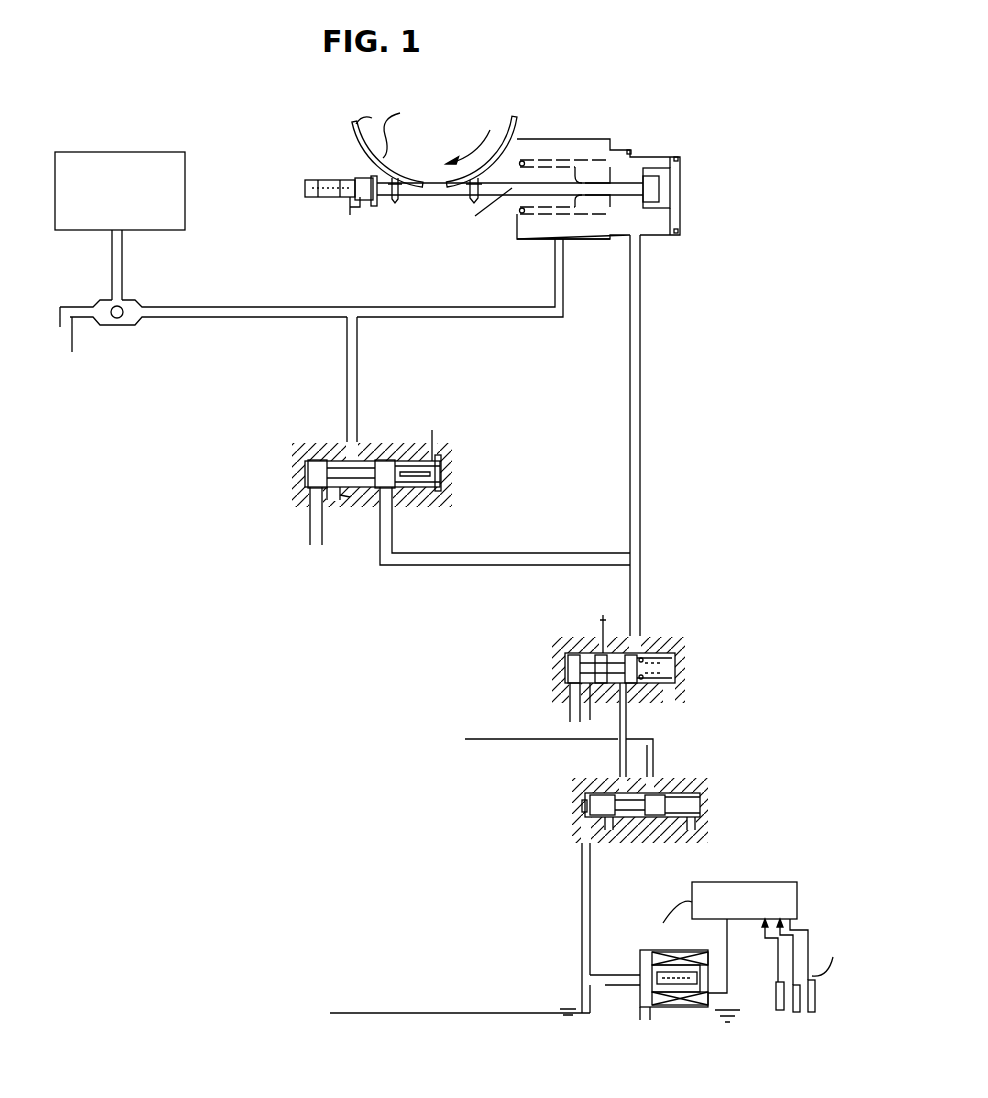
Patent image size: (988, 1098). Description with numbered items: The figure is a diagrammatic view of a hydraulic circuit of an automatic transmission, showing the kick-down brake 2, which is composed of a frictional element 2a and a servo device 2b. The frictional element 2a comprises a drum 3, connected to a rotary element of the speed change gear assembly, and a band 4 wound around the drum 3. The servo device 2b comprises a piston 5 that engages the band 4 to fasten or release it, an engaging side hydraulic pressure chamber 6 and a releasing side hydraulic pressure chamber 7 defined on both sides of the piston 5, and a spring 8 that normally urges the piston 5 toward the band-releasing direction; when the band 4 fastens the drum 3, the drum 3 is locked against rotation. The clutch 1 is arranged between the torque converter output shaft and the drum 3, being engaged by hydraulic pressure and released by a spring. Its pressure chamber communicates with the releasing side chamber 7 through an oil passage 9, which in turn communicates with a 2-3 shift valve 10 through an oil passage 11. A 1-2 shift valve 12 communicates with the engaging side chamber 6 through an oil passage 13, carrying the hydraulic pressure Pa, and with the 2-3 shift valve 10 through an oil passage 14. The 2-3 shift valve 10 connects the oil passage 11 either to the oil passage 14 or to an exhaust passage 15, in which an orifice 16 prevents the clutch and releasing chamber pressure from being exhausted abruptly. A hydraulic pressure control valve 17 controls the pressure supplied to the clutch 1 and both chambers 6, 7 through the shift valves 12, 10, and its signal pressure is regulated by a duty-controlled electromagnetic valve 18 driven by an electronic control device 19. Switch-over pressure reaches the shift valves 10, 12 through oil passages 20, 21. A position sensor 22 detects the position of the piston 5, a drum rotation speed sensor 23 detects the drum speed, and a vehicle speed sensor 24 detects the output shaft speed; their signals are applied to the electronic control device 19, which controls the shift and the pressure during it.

The clutch 1 is at (172, 152).
The K/D brake 2 is at (632, 64).
The frictional element 2a is at (568, 106).
The servo device 2b is at (642, 138).
The drum 3 is at (509, 118).
The band 4 is at (527, 126).
The piston 5 is at (524, 191).
The engaging side hydraulic pressure chamber 6 is at (634, 237).
The releasing side hydraulic pressure chamber 7 is at (536, 232).
The spring 8 is at (581, 155).
The oil passage 9 is at (272, 306).
The 2-3 shift valve 10 is at (461, 443).
The oil passage 11 is at (357, 392).
The 1-2 shift valve 12 is at (704, 640).
The oil passage 13 is at (641, 473).
The oil passage 14 is at (515, 553).
The exhaust passage 15 is at (343, 496).
The orifice 16 is at (335, 500).
The hydraulic pressure control valve 17 is at (711, 774).
The electromagnetic valve 18 is at (688, 1018).
The electronic control device 19 is at (748, 883).
The oil passage 20 is at (312, 532).
The oil passage 21 is at (568, 708).
The position sensor 22 is at (780, 1014).
The drum rotation speed sensor 23 is at (790, 1014).
The vehicle speed sensor 24 is at (812, 1016).
The hydraulic pressure Pa is at (641, 352).